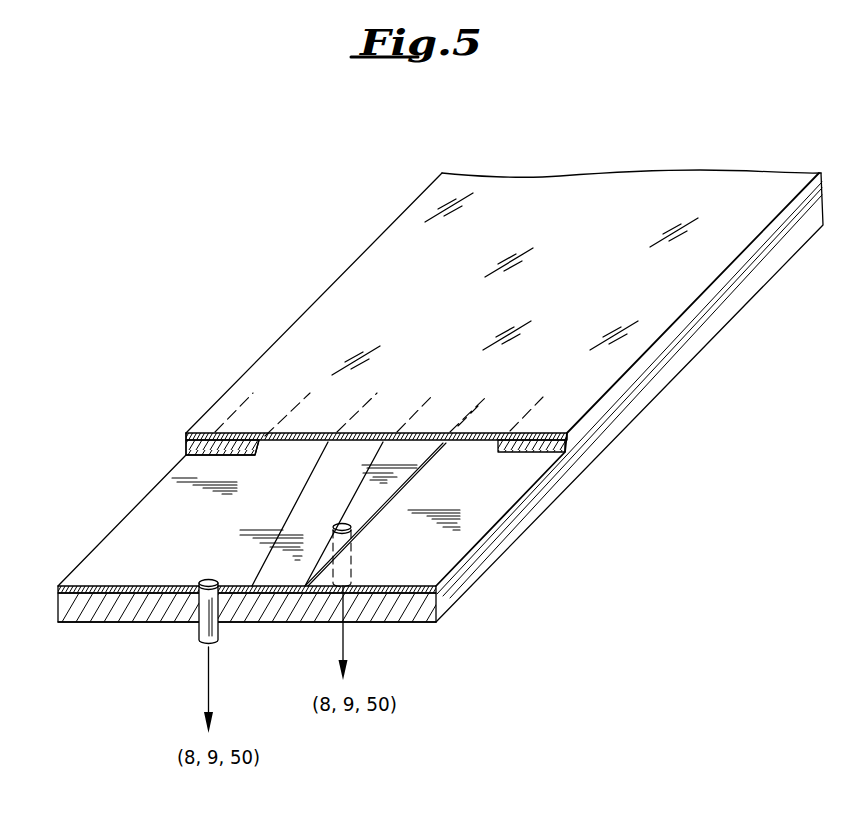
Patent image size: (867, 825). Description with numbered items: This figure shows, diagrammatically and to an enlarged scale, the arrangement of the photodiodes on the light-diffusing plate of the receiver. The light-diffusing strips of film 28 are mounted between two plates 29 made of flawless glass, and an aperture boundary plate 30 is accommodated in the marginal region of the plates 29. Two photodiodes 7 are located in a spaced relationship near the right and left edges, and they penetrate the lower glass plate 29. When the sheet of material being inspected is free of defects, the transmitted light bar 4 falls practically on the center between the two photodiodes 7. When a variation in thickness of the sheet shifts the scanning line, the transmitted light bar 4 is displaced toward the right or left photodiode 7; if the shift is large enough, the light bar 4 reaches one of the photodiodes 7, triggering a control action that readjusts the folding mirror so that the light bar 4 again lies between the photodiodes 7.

The transmitted light bar 4 is at (292, 536).
The photodiodes 7 is at (206, 580).
The light-diffusing strips of film 28 is at (99, 580).
The plates made of flawless glass 29 is at (232, 428).
The aperture boundary plate 30 is at (197, 457).